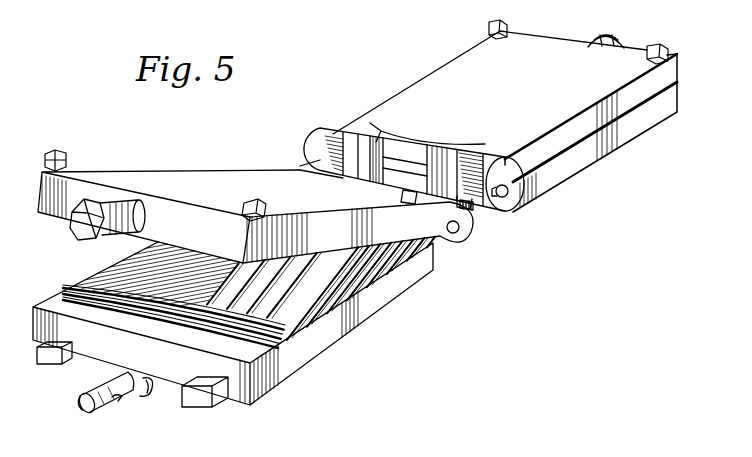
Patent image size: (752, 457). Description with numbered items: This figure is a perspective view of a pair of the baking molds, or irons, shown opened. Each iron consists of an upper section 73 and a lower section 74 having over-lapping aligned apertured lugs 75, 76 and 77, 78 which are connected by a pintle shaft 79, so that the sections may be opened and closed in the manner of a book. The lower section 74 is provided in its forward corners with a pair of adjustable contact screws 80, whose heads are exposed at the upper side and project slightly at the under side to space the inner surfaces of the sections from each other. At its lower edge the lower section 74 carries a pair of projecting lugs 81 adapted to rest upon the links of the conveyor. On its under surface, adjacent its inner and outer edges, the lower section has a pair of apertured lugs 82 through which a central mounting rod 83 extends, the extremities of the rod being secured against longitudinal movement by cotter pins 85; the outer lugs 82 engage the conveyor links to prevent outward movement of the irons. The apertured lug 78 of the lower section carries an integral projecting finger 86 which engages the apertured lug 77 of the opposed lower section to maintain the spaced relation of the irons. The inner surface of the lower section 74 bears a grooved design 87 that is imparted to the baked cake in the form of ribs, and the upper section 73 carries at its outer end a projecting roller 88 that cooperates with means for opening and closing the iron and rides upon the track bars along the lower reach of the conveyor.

The upper section 73 is at (357, 147).
The lower section 74 is at (583, 166).
The apertured lug 75 is at (331, 137).
The apertured lug 76 is at (301, 168).
The apertured lug 77 is at (377, 142).
The apertured lug 78 is at (452, 157).
The pintle shaft 79 is at (405, 162).
The adjustable contact screw 80 is at (66, 157).
The projecting lug 81 is at (56, 356).
The apertured lug 82 is at (465, 207).
The central mounting rod 83 is at (405, 193).
The cotter pin 85 is at (106, 412).
The projecting finger 86 is at (325, 165).
The grooved design 87 is at (334, 297).
The projecting roller 88 is at (105, 238).